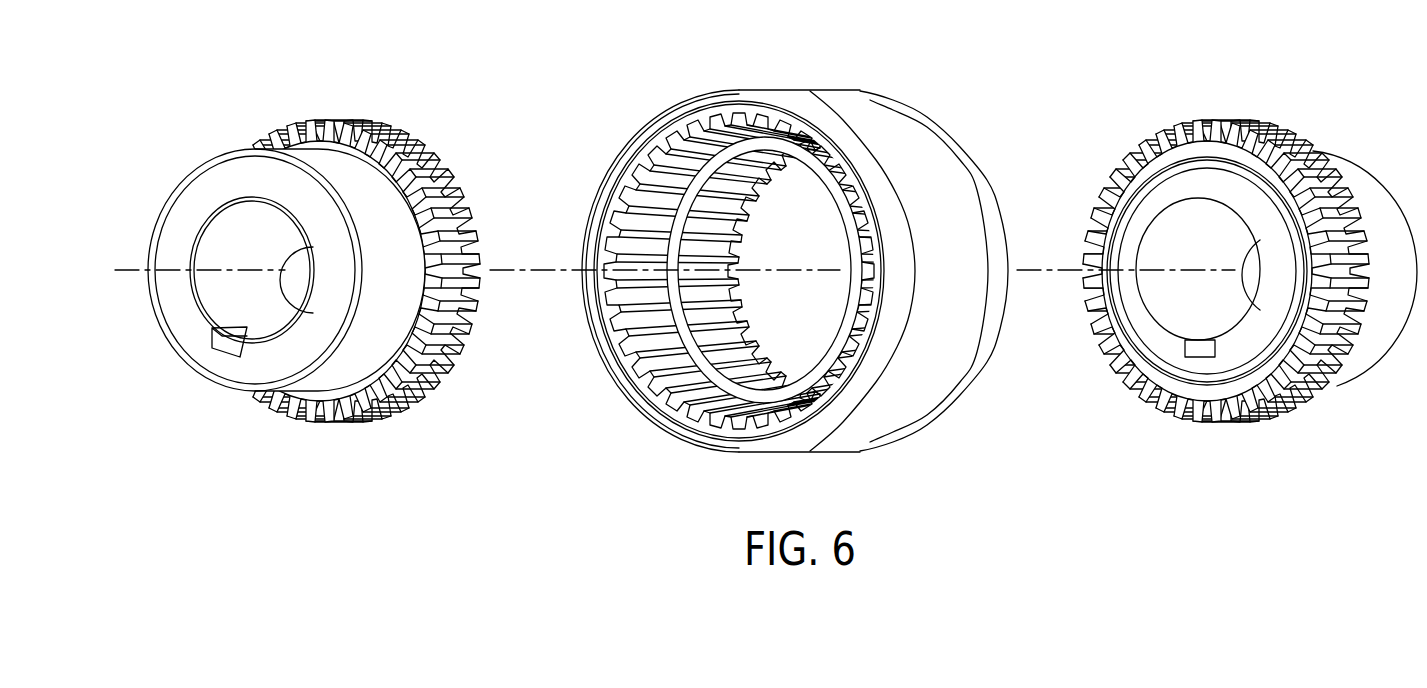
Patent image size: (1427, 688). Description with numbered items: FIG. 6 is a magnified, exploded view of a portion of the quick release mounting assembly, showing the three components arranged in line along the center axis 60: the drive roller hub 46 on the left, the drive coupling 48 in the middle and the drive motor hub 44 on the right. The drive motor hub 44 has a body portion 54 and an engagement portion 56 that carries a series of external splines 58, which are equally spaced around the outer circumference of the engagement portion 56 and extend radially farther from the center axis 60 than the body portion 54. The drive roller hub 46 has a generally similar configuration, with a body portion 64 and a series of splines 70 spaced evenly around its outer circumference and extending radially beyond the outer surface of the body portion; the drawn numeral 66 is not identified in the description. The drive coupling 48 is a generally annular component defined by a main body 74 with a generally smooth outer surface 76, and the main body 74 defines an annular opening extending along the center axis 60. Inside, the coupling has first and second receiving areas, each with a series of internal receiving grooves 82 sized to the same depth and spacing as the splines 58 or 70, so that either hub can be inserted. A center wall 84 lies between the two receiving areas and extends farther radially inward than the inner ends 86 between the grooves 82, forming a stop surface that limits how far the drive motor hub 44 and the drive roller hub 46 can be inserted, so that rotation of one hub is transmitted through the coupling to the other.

The drive motor hub 44 is at (1250, 289).
The drive roller hub 46 is at (314, 292).
The drive coupling 48 is at (781, 239).
The body portion 54 is at (1360, 182).
The engagement portion 56 is at (1207, 234).
The splines 58 is at (1252, 122).
The center axis 60 is at (1057, 270).
The body portion 64 is at (375, 350).
The gear teeth of first gear 66 is at (333, 124).
The splines 70 is at (404, 150).
The main body 74 is at (913, 397).
The outer surface 76 is at (862, 91).
The internal receiving grooves 82 is at (627, 197).
The center wall 84 is at (703, 337).
The inner ends 86 is at (660, 178).